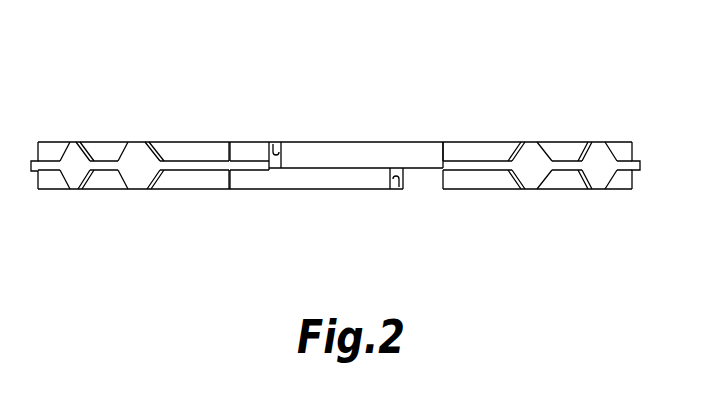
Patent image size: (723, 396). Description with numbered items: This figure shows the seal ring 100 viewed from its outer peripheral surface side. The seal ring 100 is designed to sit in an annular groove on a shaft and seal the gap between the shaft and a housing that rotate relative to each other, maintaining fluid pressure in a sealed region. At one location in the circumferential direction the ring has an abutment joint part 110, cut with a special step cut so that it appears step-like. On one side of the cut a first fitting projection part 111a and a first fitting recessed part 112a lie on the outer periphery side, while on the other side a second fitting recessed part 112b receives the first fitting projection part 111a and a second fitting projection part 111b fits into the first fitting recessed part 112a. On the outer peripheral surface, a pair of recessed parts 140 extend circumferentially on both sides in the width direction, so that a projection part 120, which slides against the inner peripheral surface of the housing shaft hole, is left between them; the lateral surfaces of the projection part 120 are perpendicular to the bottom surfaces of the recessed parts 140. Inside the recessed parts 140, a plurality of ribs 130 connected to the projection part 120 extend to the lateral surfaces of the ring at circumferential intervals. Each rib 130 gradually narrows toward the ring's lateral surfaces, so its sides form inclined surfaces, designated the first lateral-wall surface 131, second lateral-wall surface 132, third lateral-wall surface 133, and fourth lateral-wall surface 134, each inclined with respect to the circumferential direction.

The seal ring 100 is at (551, 98).
The abutment joint part 110 is at (336, 145).
The first fitting projection part 111a is at (363, 142).
The second fitting projection part 111b is at (333, 178).
The first fitting recessed part 112a is at (396, 190).
The second fitting recessed part 112b is at (276, 142).
The projection part 120 is at (474, 168).
The rib 130 is at (337, 148).
The first lateral-wall surface 131 is at (166, 190).
The second lateral-wall surface 132 is at (163, 142).
The third lateral-wall surface 133 is at (116, 190).
The fourth lateral-wall surface 134 is at (116, 142).
The recessed part 140 is at (213, 152).